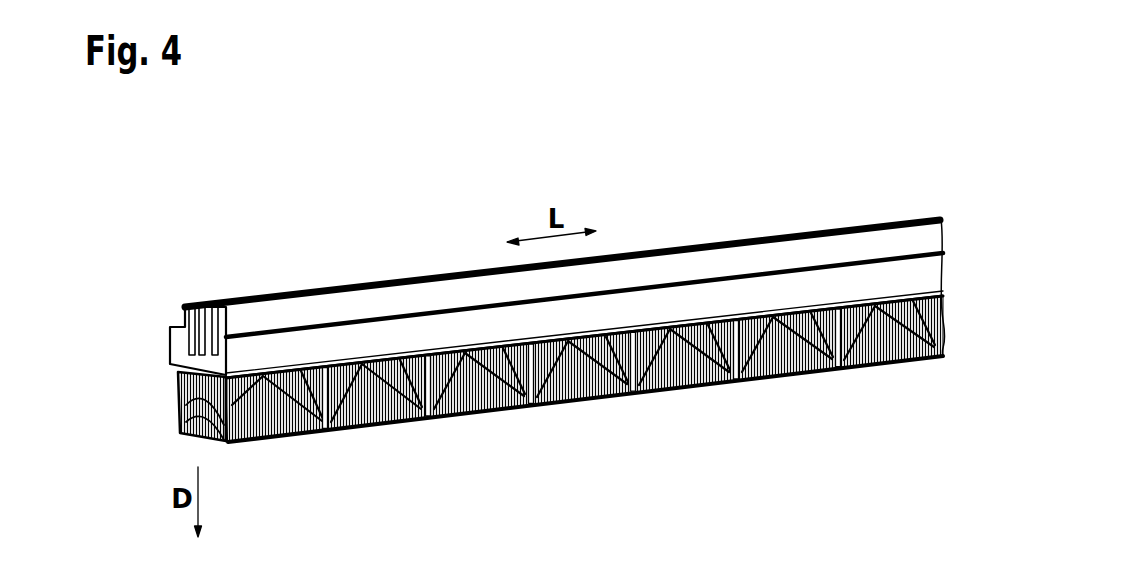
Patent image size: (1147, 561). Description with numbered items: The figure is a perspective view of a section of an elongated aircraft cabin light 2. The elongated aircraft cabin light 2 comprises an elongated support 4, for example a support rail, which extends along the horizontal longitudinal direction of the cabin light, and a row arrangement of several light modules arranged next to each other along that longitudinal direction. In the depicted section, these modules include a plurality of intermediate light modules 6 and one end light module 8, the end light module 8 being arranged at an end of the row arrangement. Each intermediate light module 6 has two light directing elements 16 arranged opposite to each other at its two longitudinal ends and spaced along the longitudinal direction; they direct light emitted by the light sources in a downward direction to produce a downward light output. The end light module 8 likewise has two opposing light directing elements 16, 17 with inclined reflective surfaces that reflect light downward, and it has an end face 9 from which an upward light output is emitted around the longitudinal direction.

The elongated aircraft cabin light 2 is at (668, 190).
The elongated support 4 is at (400, 306).
The intermediate light module 6 is at (611, 432).
The end light module 8 is at (260, 463).
The end face 9 is at (164, 436).
The light directing element 16 is at (583, 408).
The light directing element 17 is at (200, 386).